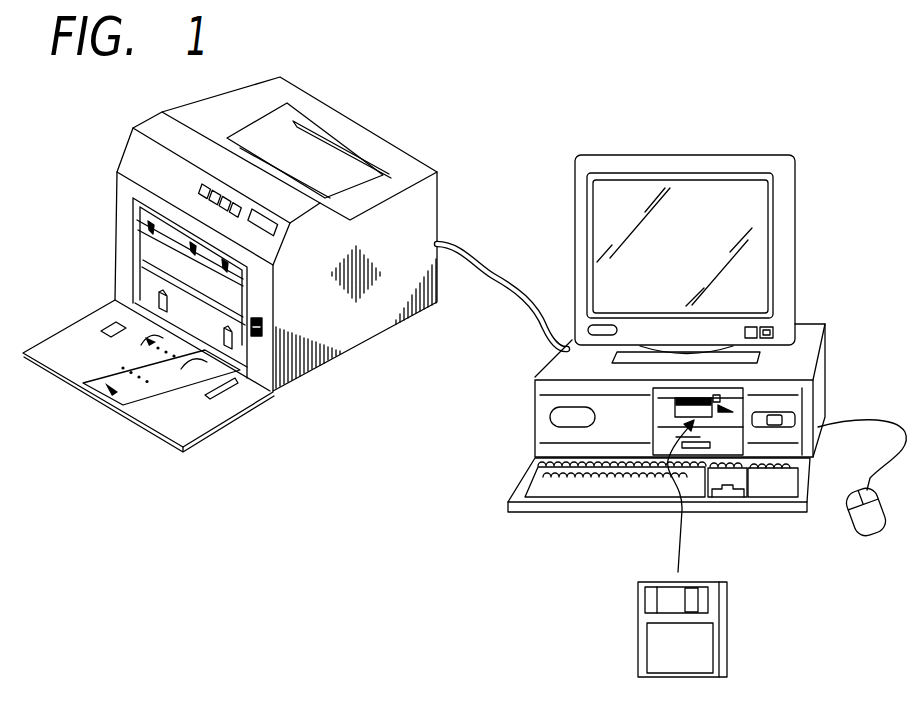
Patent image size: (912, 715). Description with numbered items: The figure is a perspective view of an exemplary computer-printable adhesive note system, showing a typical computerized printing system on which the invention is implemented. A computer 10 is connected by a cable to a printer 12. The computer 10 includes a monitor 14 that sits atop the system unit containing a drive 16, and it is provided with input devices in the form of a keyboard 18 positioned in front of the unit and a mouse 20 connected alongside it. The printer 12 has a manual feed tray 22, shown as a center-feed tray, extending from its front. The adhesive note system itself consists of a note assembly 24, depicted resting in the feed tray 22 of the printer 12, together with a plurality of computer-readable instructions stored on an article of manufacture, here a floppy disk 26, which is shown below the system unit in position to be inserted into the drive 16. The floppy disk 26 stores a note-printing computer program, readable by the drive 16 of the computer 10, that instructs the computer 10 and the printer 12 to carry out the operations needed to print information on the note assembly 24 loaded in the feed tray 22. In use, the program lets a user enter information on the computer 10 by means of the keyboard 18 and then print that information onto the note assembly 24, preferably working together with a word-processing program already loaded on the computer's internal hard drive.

The computer 10 is at (674, 382).
The printer 12 is at (359, 115).
The monitor 14 is at (587, 217).
The drive 16 is at (737, 415).
The keyboard 18 is at (777, 513).
The mouse 20 is at (867, 515).
The manual feed tray 22 is at (118, 345).
The note assembly 24 is at (112, 375).
The floppy disk 26 is at (732, 648).